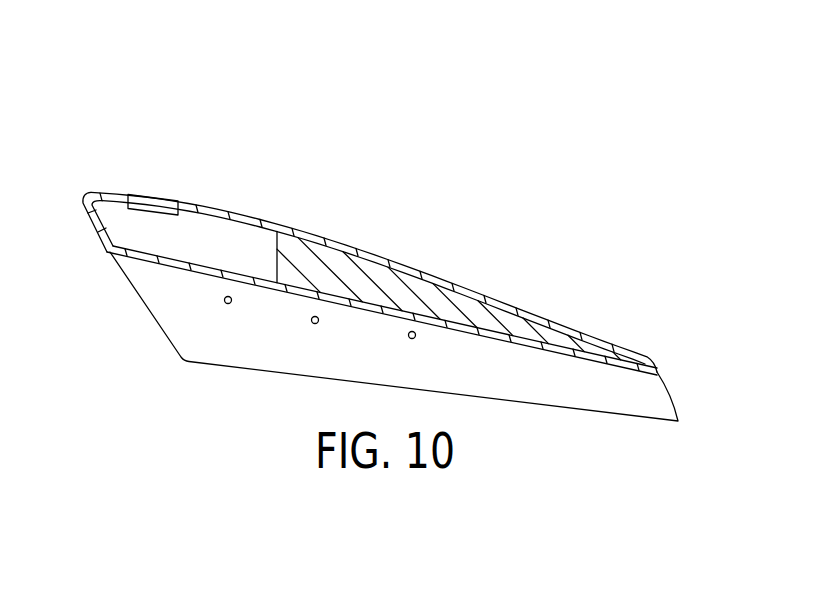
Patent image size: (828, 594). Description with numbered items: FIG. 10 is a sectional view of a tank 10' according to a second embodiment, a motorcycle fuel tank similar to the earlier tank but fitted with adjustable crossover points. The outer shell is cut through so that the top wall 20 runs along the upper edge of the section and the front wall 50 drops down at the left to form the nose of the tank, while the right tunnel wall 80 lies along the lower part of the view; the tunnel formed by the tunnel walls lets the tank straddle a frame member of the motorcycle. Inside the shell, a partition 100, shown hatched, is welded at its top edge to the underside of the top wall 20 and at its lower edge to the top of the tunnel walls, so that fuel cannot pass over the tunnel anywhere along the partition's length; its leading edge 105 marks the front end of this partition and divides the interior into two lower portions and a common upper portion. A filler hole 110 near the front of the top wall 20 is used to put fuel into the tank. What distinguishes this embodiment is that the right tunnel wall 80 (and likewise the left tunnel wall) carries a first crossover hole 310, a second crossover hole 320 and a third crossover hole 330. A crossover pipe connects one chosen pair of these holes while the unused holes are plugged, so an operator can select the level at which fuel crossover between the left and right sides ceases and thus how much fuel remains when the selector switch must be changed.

The tank 10' is at (366, 282).
The top wall 20 is at (333, 240).
The front wall 50 is at (124, 275).
The right tunnel wall 80 is at (551, 387).
The partition 100 is at (417, 288).
The leading edge 105 is at (275, 254).
The filler hole 110 is at (150, 196).
The first crossover hole 310 is at (232, 302).
The second crossover hole 320 is at (319, 322).
The third crossover hole 330 is at (416, 337).